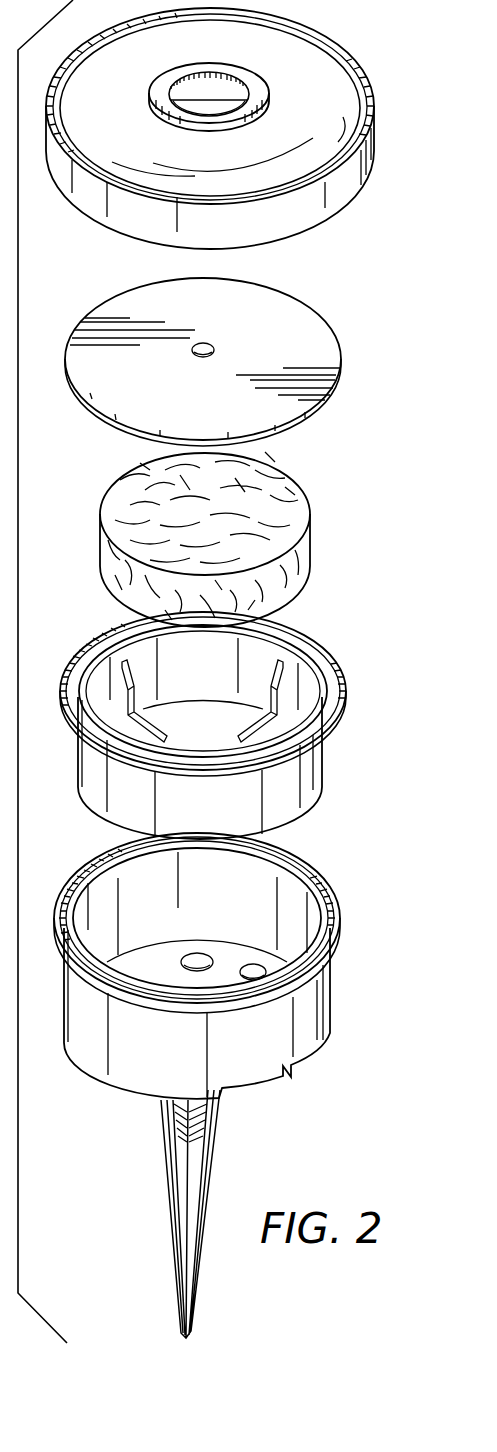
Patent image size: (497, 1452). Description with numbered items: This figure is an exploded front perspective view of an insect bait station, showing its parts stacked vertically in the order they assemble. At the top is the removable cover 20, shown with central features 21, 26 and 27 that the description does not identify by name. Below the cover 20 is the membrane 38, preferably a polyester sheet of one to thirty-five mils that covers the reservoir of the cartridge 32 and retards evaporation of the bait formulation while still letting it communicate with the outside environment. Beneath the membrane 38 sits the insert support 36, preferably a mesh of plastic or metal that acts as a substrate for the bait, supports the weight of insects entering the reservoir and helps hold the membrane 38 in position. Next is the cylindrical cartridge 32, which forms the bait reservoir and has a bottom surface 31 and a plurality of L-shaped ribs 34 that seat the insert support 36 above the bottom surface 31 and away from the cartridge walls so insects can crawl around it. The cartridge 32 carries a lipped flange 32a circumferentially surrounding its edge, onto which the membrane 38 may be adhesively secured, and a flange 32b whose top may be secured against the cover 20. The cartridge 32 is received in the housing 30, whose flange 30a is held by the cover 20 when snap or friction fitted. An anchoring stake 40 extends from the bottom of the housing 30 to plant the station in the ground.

The removable cover 20 is at (313, 92).
The lens assembly 21 is at (175, 89).
The lens 26 is at (198, 110).
The lens collar 27 is at (212, 88).
The membrane 38 is at (283, 323).
The insert support 36 is at (280, 503).
The cartridge 32 is at (219, 710).
The lipped flange 32a is at (258, 653).
The flange 32b is at (333, 653).
The bottom surface 31 is at (205, 720).
The L-shaped ribs 34 is at (123, 687).
The housing 30 is at (232, 966).
The flange 30a is at (338, 945).
The anchoring stake 40 is at (166, 1197).